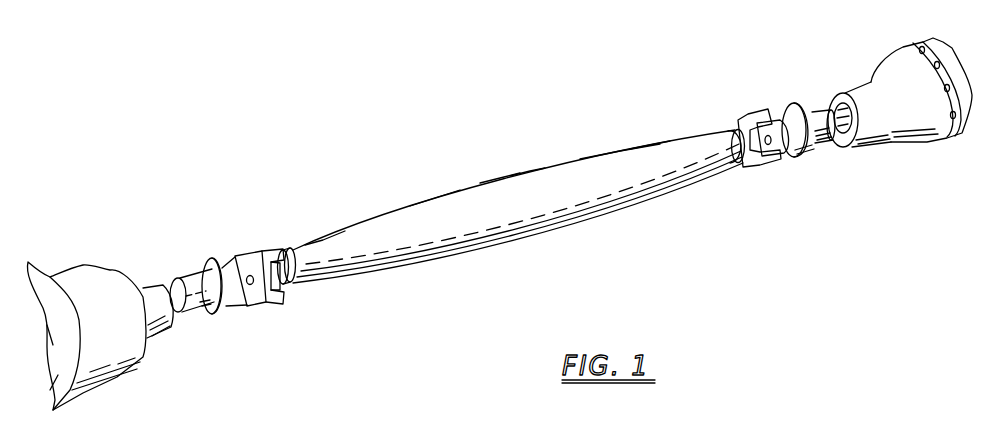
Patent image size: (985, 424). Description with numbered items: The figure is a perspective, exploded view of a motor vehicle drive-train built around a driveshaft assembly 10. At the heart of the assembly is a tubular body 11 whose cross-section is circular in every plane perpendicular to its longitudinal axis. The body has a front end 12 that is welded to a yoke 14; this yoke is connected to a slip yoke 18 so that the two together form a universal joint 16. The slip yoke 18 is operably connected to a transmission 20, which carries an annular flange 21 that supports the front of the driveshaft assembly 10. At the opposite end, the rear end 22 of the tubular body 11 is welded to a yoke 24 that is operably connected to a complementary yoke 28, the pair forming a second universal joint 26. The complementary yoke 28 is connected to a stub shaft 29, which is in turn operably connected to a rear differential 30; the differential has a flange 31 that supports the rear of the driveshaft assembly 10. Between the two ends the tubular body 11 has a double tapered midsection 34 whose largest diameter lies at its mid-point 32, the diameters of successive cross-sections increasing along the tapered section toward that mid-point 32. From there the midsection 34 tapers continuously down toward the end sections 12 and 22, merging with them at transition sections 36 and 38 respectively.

The driveshaft assembly 10 is at (538, 168).
The tubular body 11 is at (587, 170).
The front end 12 is at (293, 250).
The yoke 14 is at (262, 253).
The universal joint 16 is at (235, 257).
The slip yoke 18 is at (187, 281).
The transmission 20 is at (103, 280).
The annular flange 21 is at (165, 313).
The rear end 22 is at (723, 140).
The yoke 24 is at (740, 123).
The universal joint 26 is at (767, 115).
The complementary yoke 28 is at (797, 147).
The stub shaft 29 is at (823, 143).
The rear differential 30 is at (923, 130).
The flange 31 is at (833, 100).
The mid-point 32 is at (507, 173).
The double tapered midsection 34 is at (435, 200).
The transition section 36 is at (323, 242).
The transition section 38 is at (527, 173).